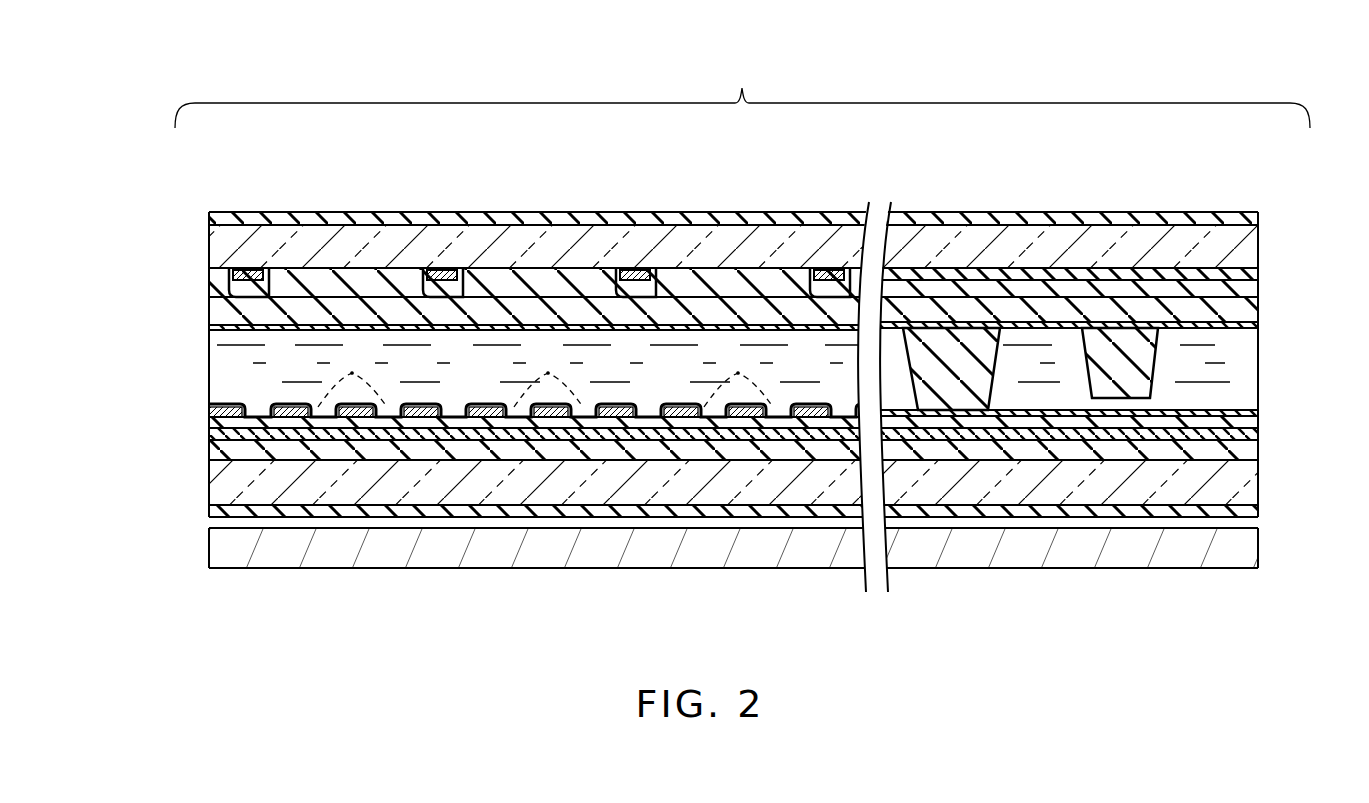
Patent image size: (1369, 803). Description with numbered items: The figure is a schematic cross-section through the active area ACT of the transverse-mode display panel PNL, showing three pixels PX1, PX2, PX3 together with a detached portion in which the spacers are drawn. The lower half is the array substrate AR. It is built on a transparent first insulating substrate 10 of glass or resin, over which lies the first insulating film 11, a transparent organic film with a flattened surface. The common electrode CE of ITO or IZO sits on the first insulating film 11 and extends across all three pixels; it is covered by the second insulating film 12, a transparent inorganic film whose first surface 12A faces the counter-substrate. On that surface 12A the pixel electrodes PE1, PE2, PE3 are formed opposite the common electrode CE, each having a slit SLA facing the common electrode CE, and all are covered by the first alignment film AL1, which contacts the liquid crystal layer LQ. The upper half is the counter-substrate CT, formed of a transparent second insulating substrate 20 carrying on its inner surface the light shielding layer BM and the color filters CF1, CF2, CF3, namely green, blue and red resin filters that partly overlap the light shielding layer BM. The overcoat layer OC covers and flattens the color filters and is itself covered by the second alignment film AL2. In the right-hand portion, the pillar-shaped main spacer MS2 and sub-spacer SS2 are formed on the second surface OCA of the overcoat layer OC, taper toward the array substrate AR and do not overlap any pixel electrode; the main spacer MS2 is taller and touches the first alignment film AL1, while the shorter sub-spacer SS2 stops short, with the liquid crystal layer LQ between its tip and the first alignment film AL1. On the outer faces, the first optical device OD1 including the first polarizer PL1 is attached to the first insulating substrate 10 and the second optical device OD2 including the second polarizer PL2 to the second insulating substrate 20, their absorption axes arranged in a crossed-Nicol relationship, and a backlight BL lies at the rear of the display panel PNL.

The active area ACT is at (742, 89).
The pixel PX1 is at (400, 199).
The pixel PX2 is at (595, 199).
The pixel PX3 is at (793, 199).
The light shielding layer BM is at (246, 275).
The color filter CF1 is at (345, 290).
The color filter CF2 is at (541, 290).
The color filter CF3 is at (741, 290).
The second optical device OD2 is at (680, 199).
The second polarizer PL2 is at (226, 220).
The second insulating substrate 20 is at (226, 258).
The overcoat layer OC is at (226, 310).
The second alignment film AL2 is at (226, 326).
The second surface OCA is at (1229, 330).
The liquid crystal layer LQ is at (1246, 372).
The slit SLA is at (545, 376).
The first surface 12A is at (252, 410).
The first alignment film AL1 is at (226, 407).
The second insulating film 12 is at (226, 421).
The common electrode CE is at (226, 433).
The first insulating film 11 is at (226, 448).
The first insulating substrate 10 is at (226, 482).
The first optical device OD1 is at (678, 530).
The first polarizer PL1 is at (226, 512).
The backlight BL is at (226, 548).
The pixel electrode PE1 is at (350, 417).
The pixel electrode PE2 is at (547, 417).
The pixel electrode PE3 is at (743, 417).
The main spacer MS2 is at (947, 397).
The sub-spacer SS2 is at (1137, 395).
The display panel PNL is at (1261, 223).
The counter-substrate CT is at (1261, 279).
The array substrate AR is at (1261, 448).